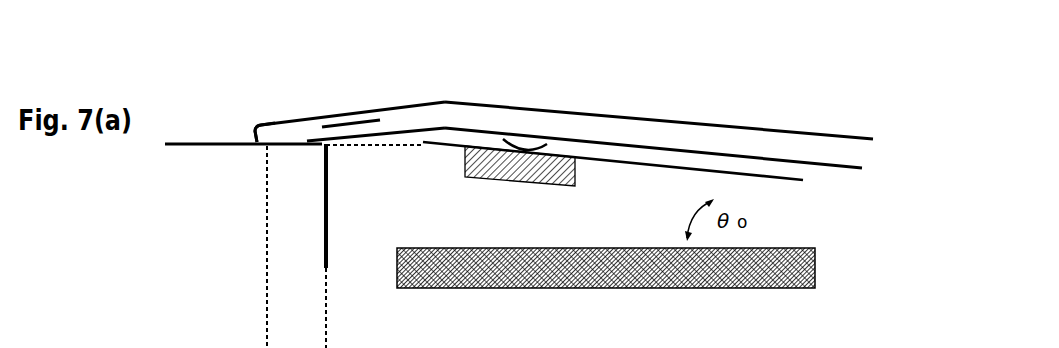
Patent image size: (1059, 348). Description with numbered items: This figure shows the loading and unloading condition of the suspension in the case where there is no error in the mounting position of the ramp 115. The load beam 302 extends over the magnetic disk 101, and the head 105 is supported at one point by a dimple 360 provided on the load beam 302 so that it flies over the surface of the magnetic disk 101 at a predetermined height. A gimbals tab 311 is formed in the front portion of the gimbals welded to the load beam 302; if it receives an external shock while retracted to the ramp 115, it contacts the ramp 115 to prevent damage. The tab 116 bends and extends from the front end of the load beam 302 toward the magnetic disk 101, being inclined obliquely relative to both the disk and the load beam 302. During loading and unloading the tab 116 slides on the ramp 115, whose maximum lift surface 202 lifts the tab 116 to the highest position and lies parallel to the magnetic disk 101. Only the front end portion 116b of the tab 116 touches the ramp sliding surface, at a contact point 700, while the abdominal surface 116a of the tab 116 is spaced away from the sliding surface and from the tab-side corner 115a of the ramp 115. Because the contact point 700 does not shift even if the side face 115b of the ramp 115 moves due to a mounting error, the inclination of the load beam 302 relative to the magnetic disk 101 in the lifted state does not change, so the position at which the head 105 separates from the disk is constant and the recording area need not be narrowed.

The magnetic disk 101 is at (767, 289).
The head 105 is at (522, 182).
The ramp 115 is at (280, 246).
The tab-side corner 115a is at (330, 150).
The side face 115b is at (328, 262).
The tab 116 is at (292, 121).
The abdominal surface 116a is at (322, 127).
The front end portion 116b is at (251, 140).
The maximum lift surface 202 is at (180, 143).
The load beam 302 is at (668, 109).
The gimbals tab 311 is at (610, 158).
The dimple 360 is at (515, 140).
The contact point 700 is at (267, 148).